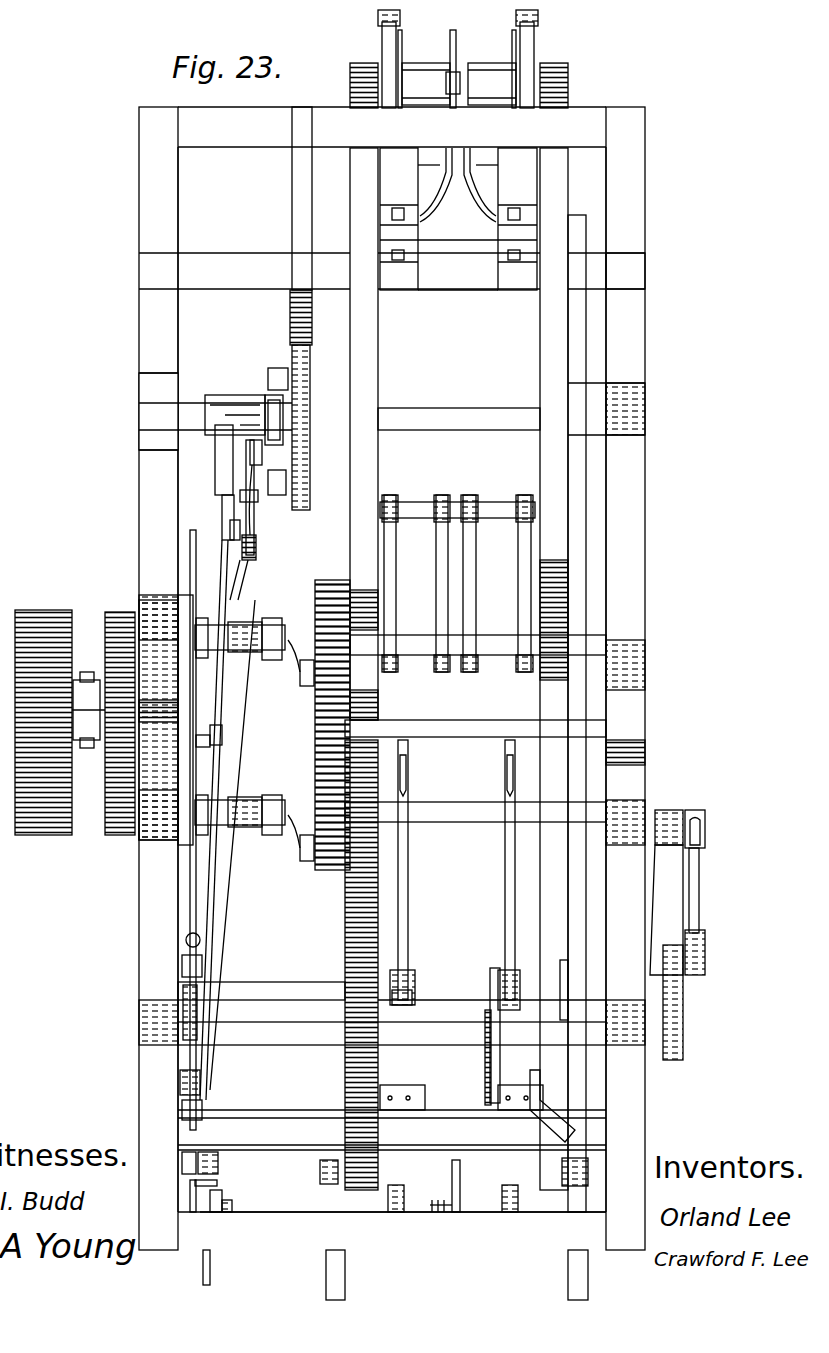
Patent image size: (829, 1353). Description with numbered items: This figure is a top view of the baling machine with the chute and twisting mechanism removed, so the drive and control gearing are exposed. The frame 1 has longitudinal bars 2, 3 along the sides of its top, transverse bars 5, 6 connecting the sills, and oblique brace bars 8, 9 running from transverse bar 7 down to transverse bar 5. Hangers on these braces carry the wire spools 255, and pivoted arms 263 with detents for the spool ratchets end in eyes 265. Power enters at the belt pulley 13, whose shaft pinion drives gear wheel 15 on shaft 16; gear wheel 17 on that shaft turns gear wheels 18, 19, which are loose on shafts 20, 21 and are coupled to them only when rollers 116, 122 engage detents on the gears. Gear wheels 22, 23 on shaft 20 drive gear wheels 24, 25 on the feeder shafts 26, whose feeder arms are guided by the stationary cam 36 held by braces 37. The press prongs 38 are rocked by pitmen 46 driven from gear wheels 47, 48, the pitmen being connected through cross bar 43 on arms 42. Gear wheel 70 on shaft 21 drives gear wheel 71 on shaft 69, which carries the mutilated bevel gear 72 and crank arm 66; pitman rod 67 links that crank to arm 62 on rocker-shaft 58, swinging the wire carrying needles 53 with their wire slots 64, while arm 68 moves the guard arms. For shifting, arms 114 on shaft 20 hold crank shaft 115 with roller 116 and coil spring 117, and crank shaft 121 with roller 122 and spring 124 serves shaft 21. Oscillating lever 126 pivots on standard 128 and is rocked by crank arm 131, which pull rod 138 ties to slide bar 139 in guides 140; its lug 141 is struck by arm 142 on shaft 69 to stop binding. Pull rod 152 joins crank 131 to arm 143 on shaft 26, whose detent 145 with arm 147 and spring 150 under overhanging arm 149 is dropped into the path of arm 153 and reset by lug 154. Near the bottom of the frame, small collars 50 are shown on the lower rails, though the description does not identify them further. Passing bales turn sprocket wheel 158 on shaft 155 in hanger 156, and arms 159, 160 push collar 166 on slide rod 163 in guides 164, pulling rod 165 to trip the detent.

The frame 1 is at (632, 232).
The longitudinal bar 2 is at (135, 218).
The longitudinal bar 3 is at (628, 274).
The transverse bar 5 is at (206, 266).
The transverse bar 6 is at (428, 1130).
The transverse bar 7 is at (572, 128).
The oblique brace bar 8 is at (426, 280).
The oblique brace bar 9 is at (495, 280).
The belt pulley 13 is at (45, 840).
The gear wheel 15 is at (120, 842).
The rotatable shaft 16 is at (440, 730).
The gear wheel 17 is at (352, 714).
The gear wheel 18 is at (318, 592).
The gear wheel 19 is at (308, 870).
The shaft 20 is at (488, 646).
The shaft 21 is at (468, 814).
The gear wheel 22 is at (370, 608).
The gear wheel 23 is at (560, 626).
The gear wheel 24 is at (372, 452).
The gear wheel 25 is at (548, 456).
The feeder shaft 26 is at (470, 420).
The stationary cam 36 is at (294, 332).
The brace 37 is at (300, 174).
The press prong 38 is at (440, 662).
The rearwardly extending arm 42 is at (440, 548).
The cross bar 43 is at (492, 512).
The pitman 46 is at (348, 274).
The gear wheel 47 is at (350, 78).
The gear wheel 48 is at (575, 90).
The collar 50 is at (320, 1174).
The wire carrying needle 53 is at (505, 894).
The rocker-shaft 58 is at (448, 990).
The arm 62 is at (668, 898).
The slot 64 is at (507, 764).
The crank arm 66 is at (680, 1008).
The pitman rod 67 is at (696, 896).
The arm 68 is at (565, 972).
The shaft 69 is at (270, 1032).
The gear wheel 70 is at (380, 845).
The gear wheel 71 is at (382, 948).
The mutilated bevel gear 72 is at (488, 1066).
The parallel arms 114 is at (205, 620).
The crank shaft 115 is at (296, 666).
The roller 116 is at (310, 676).
The coil spring 117 is at (262, 575).
The crank shaft 121 is at (300, 830).
The roller 122 is at (236, 806).
The spring 124 is at (240, 828).
The oscillating lever 126 is at (186, 842).
The standard 128 is at (148, 600).
The crank arm 131 is at (222, 730).
The pull rod 138 is at (196, 926).
The slide bar 139 is at (192, 1066).
The guide 140 is at (190, 966).
The lug 141 is at (185, 1082).
The arm 142 is at (165, 1002).
The arm 143 is at (222, 410).
The detent 145 is at (278, 490).
The arm 147 is at (248, 470).
The overhanging arm 149 is at (240, 536).
The spiral compression spring 150 is at (232, 528).
The pull rod 152 is at (240, 552).
The arm 153 is at (282, 422).
The lug 154 is at (280, 376).
The shaft 155 is at (300, 1210).
The hanger 156 is at (512, 1186).
The sprocket wheel 158 is at (462, 1190).
The arm 159 is at (228, 1212).
The arm 160 is at (212, 1186).
The slide rod 163 is at (208, 1272).
The guide 164 is at (186, 1160).
The pull rod 165 is at (222, 992).
The collar 166 is at (190, 1186).
The wire spool 255 is at (490, 75).
The arm 263 is at (392, 52).
The eye 265 is at (482, 165).